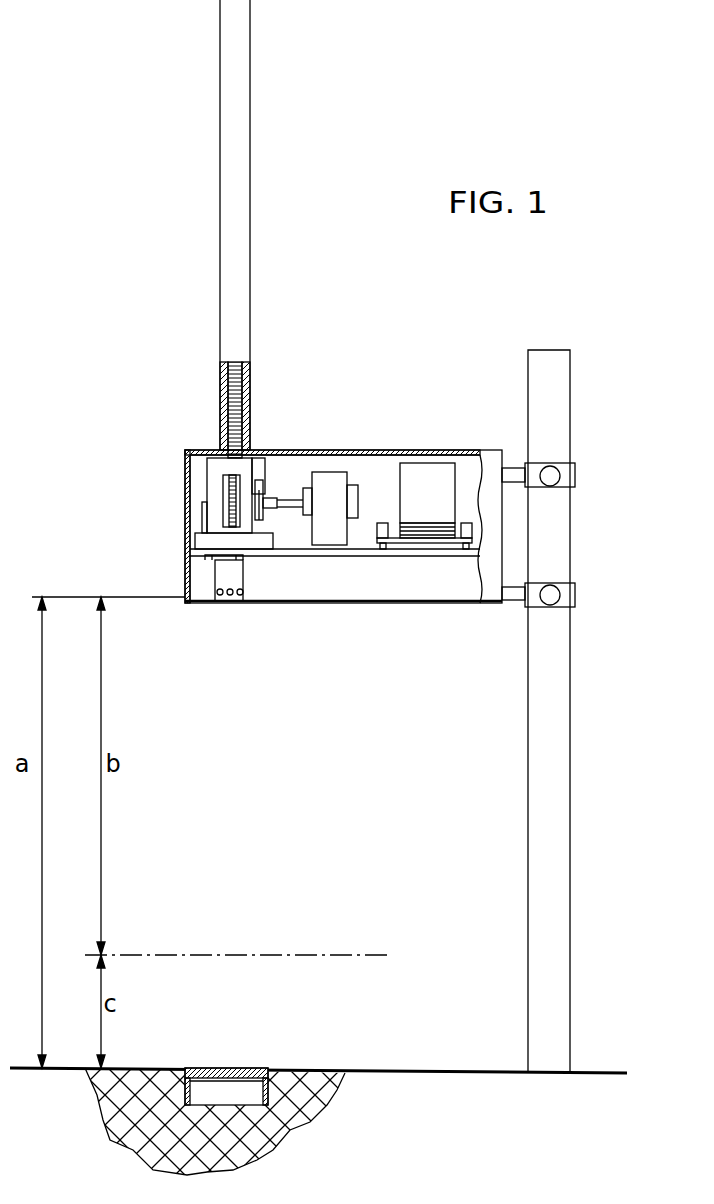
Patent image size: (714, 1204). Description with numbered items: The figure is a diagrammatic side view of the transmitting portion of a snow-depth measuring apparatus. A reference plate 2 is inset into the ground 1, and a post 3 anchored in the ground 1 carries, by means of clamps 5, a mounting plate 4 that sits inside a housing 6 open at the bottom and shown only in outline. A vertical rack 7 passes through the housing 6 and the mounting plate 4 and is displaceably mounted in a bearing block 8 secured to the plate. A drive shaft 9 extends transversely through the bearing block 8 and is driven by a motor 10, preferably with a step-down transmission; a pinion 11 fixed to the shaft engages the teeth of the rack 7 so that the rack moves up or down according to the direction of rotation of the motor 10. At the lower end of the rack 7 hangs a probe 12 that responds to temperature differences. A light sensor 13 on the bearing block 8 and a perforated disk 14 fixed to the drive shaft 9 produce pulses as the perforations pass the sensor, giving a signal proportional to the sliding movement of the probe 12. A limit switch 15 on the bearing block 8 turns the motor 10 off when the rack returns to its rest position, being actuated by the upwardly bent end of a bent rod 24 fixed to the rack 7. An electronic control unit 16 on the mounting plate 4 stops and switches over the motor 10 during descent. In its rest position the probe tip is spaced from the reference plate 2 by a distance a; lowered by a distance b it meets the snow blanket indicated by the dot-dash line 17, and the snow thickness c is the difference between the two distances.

The ground 1 is at (125, 1114).
The reference plate 2 is at (248, 1066).
The post 3 is at (560, 650).
The mounting plate 4 is at (355, 553).
The clamps 5 is at (577, 478).
The housing 6 is at (457, 452).
The rack 7 is at (230, 410).
The bearing block 8 is at (213, 472).
The drive shaft 9 is at (288, 507).
The motor 10 is at (333, 477).
The pinion 11 is at (203, 509).
The probe 12 is at (220, 577).
The light sensor 13 is at (262, 462).
The perforated disk 14 is at (268, 495).
The limit switch 15 is at (225, 521).
The electronic control unit 16 is at (428, 478).
The dot-dash line 17 is at (290, 955).
The bent rod 24 is at (207, 558).